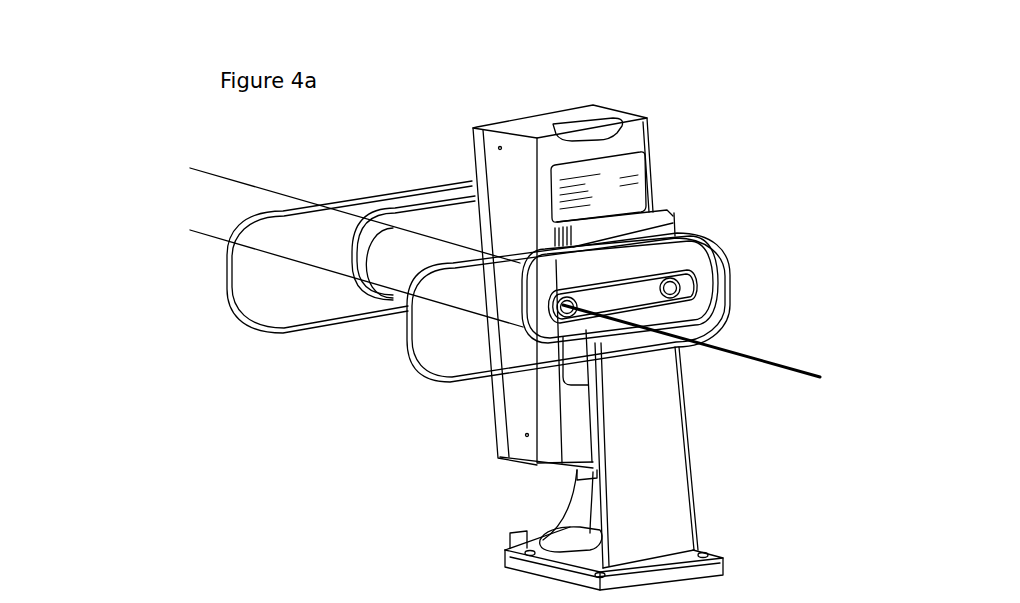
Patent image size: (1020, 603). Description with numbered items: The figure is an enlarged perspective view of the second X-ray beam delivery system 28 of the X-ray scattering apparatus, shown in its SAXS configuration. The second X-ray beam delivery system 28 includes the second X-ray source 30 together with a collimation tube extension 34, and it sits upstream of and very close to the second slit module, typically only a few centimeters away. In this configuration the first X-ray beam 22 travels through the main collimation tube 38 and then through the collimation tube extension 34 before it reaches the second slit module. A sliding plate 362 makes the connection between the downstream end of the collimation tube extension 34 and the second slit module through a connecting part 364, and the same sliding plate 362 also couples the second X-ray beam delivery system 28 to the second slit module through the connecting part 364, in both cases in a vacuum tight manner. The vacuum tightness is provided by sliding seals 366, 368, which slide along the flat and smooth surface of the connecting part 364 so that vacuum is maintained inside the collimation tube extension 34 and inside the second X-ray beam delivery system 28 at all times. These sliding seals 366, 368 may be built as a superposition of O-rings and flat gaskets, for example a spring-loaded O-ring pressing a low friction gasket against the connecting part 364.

The first X-ray beam 22 is at (802, 373).
The second X-ray beam delivery system 28 is at (725, 117).
The second X-ray source 30 is at (633, 142).
The collimation tube extension 34 is at (403, 275).
The main collimation tube 38 is at (238, 210).
The sliding plate 362 is at (547, 325).
The connecting part 364 is at (233, 285).
The sliding seal 366 is at (687, 285).
The sliding seal 368 is at (687, 275).